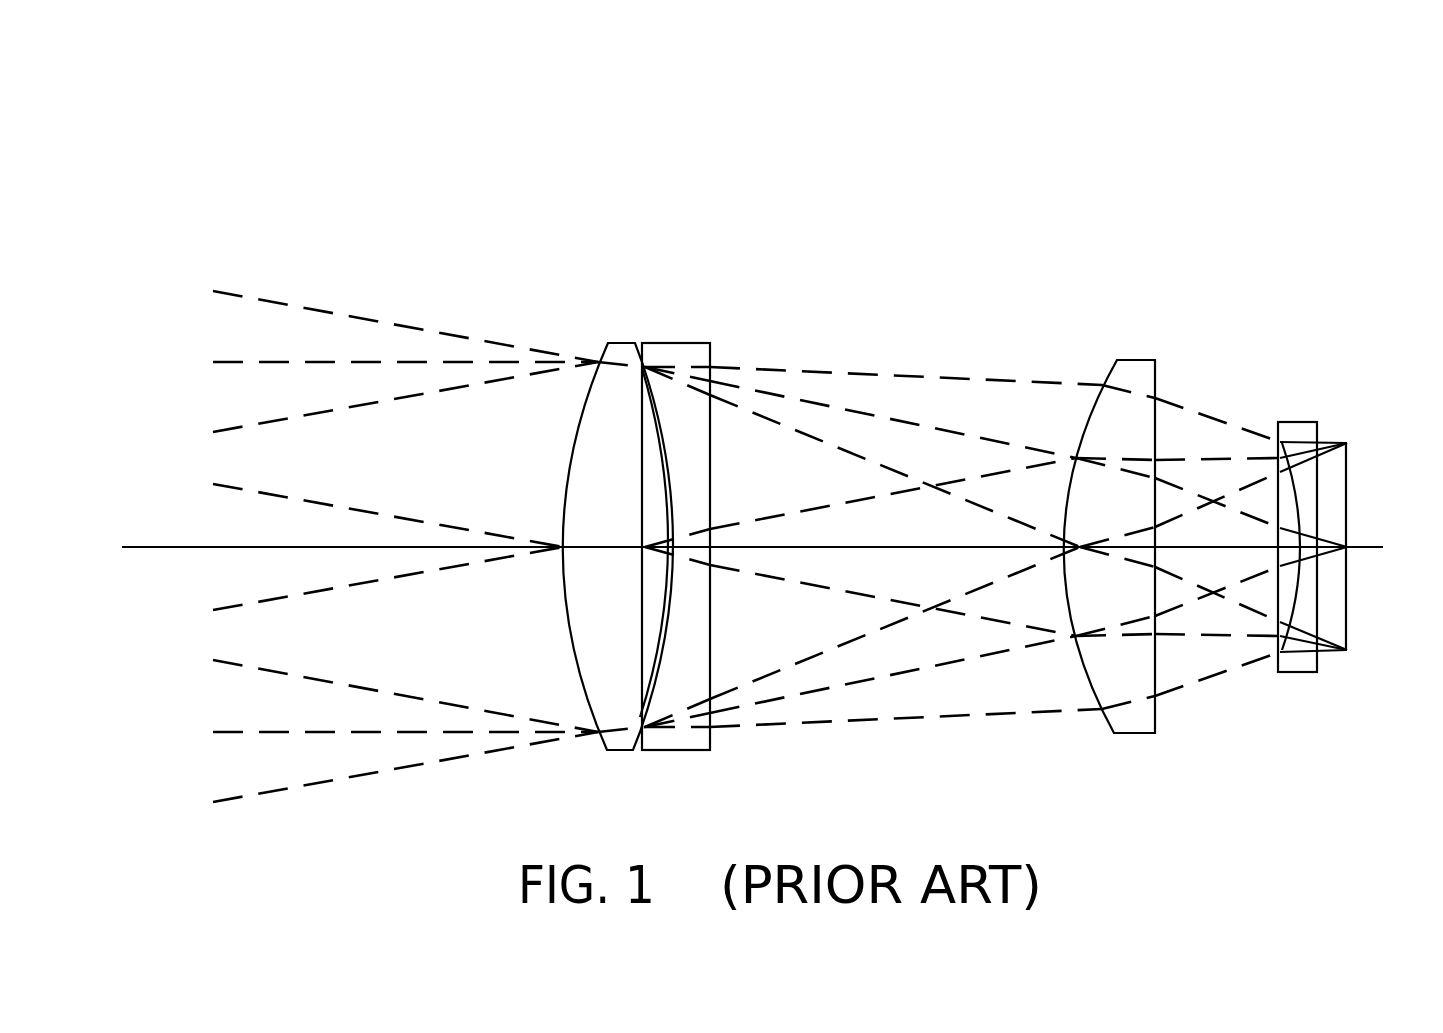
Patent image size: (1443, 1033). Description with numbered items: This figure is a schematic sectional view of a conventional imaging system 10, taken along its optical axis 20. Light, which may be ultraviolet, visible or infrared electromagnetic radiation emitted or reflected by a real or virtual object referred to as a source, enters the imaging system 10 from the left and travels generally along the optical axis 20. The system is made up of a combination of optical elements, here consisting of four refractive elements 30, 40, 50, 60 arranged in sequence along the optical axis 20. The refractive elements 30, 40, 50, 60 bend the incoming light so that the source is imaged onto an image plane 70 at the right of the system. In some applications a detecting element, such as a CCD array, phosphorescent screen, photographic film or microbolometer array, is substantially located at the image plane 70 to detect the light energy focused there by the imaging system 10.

The imaging system 10 is at (258, 168).
The optical axis 20 is at (155, 546).
The refractive element 30 is at (623, 352).
The refractive element 40 is at (679, 353).
The refractive element 50 is at (1134, 377).
The refractive element 60 is at (1299, 440).
The image plane 70 is at (1348, 609).